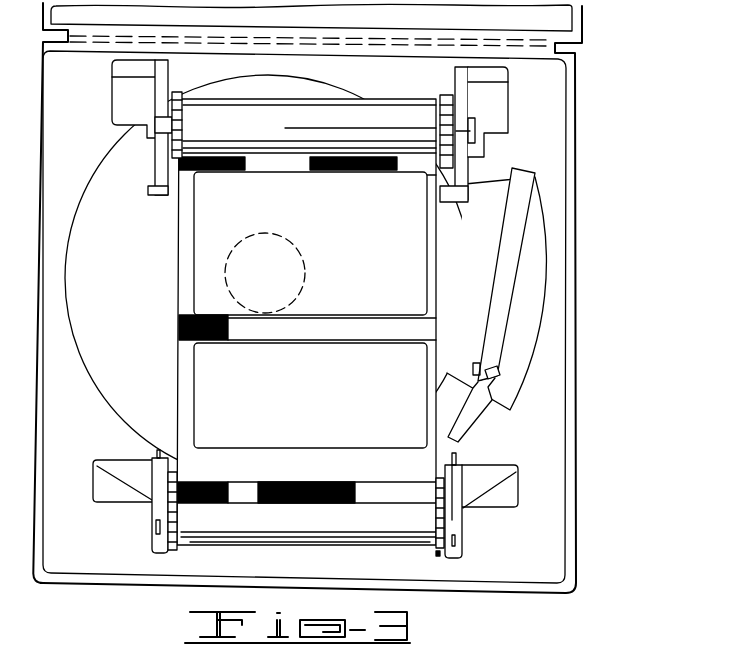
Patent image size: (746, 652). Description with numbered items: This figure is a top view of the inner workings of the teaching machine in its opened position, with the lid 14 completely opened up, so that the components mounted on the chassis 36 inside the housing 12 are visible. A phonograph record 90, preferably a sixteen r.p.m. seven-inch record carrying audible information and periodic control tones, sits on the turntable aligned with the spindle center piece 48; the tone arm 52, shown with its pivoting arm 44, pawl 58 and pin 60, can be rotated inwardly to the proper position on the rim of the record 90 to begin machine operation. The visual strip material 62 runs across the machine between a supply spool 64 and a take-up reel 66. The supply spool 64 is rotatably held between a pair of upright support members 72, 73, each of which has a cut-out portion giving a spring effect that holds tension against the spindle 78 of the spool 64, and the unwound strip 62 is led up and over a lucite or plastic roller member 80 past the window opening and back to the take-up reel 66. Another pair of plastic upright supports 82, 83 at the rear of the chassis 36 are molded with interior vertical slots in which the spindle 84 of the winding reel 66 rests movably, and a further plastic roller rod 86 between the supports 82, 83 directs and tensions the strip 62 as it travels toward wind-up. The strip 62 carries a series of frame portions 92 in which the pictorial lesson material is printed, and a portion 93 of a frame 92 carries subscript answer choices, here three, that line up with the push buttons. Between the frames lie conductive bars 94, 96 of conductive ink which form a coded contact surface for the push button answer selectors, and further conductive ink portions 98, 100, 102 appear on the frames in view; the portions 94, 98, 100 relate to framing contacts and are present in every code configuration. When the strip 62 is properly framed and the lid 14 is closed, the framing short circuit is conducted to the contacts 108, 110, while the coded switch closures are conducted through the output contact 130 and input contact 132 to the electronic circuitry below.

The housing 12 is at (574, 443).
The lid 14 is at (570, 17).
The chassis 36 is at (566, 399).
The sector arm 44 is at (538, 241).
The spindle center piece 48 is at (246, 240).
The tone arm 52 is at (526, 191).
The pawl 58 is at (500, 371).
The pin 60 is at (495, 366).
The visual strip material 62 is at (178, 361).
The supply spool 64 is at (176, 552).
The take-up reel 66 is at (436, 96).
The upright support member 72 is at (462, 538).
The upright support member 73 is at (150, 537).
The spindle 78 is at (448, 525).
The roller member 80 is at (448, 515).
The upright support 82 is at (460, 162).
The upright support 83 is at (158, 158).
The spindle 84 is at (456, 131).
The roller rod 86 is at (165, 192).
The phonograph record 90 is at (118, 270).
The frame portion 92 is at (309, 232).
The answer choice portion 93 is at (340, 465).
The conductive bar 94 is at (205, 496).
The conductive bar 96 is at (356, 492).
The conductive ink portion 98 is at (178, 325).
The conductive ink portion 100 is at (214, 150).
The conductive ink portion 102 is at (350, 178).
The contact 108 is at (176, 544).
The contact 110 is at (166, 556).
The output contact 130 is at (447, 558).
The input contact 132 is at (434, 556).